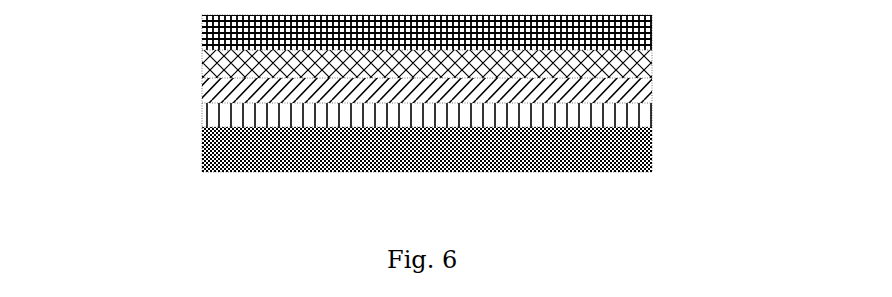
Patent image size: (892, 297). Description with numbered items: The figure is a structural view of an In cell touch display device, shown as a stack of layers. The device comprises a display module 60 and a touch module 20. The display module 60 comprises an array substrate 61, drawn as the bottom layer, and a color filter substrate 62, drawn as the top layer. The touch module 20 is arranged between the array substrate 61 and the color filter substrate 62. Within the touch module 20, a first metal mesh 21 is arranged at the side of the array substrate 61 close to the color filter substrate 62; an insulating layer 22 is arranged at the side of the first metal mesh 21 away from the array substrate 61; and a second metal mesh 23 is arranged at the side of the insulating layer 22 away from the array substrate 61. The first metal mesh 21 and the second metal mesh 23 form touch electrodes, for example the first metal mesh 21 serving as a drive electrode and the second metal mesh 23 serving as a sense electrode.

The display module 60 is at (424, 93).
The array substrate 61 is at (202, 150).
The color filter substrate 62 is at (202, 37).
The touch module 20 is at (510, 86).
The first metal mesh 21 is at (652, 104).
The insulating layer 22 is at (652, 87).
The second metal mesh 23 is at (652, 64).